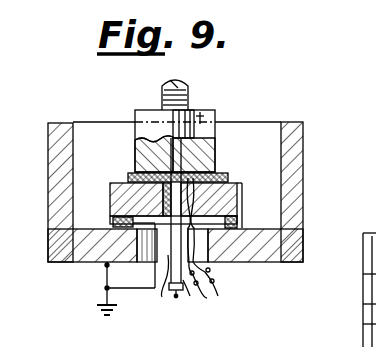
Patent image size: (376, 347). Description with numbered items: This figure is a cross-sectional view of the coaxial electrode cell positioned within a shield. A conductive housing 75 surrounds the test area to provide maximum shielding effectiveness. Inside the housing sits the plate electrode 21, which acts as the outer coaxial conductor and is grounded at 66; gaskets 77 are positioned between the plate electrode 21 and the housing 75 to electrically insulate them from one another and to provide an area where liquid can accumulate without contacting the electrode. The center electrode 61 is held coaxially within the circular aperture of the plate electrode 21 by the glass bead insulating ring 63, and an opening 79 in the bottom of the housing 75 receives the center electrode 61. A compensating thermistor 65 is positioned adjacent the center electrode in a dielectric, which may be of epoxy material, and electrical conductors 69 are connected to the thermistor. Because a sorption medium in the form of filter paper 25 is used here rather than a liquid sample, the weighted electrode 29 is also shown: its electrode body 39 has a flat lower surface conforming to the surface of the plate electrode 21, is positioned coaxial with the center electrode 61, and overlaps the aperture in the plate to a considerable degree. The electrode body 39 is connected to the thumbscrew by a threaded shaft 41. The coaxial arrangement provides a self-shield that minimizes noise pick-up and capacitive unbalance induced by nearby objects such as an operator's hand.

The plate electrode 21 is at (243, 198).
The filter paper 25 is at (133, 158).
The weighted electrode 29 is at (215, 104).
The electrode body 39 is at (137, 121).
The threaded shaft 41 is at (163, 90).
The center electrode 61 is at (183, 291).
The glass bead insulating ring 63 is at (130, 177).
The compensating thermistor 65 is at (199, 200).
The ground 66 is at (105, 297).
The electrical conductors 69 is at (208, 291).
The conductive housing 75 is at (297, 131).
The gaskets 77 is at (111, 218).
The opening 79 is at (162, 297).